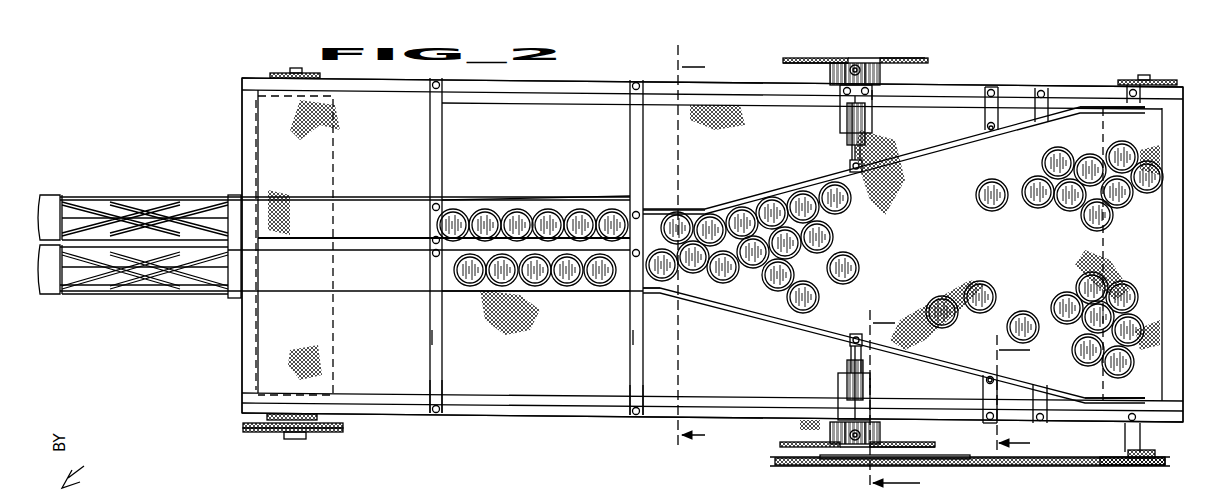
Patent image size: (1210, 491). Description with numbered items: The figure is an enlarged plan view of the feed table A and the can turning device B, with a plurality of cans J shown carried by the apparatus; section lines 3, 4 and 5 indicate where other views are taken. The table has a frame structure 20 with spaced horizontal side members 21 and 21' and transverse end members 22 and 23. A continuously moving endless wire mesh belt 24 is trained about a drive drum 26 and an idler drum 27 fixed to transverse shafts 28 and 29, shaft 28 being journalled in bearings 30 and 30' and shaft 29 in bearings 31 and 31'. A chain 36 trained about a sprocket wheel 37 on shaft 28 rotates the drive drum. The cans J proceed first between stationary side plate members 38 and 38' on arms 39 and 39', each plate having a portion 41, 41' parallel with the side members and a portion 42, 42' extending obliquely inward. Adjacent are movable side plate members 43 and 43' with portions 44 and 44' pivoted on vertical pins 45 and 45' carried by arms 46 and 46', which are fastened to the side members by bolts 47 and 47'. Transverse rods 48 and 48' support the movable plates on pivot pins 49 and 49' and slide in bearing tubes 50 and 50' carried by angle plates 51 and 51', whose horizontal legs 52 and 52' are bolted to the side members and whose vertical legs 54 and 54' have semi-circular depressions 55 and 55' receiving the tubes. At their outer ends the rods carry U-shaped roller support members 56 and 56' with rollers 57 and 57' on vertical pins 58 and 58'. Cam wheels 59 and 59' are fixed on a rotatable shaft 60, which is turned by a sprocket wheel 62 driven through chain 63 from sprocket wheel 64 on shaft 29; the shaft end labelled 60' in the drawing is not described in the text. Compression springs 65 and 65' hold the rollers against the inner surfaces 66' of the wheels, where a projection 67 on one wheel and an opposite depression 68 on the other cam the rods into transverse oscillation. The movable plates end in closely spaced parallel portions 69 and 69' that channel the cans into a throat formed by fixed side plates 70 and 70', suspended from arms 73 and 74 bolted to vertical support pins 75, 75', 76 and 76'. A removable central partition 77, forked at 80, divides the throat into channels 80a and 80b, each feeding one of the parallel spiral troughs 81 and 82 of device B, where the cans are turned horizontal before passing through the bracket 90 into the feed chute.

The frame structure 20 is at (240, 128).
The frame side member 21 is at (712, 396).
The frame side member 21' is at (712, 103).
The end member 22 is at (1166, 240).
The end member 23 is at (246, 335).
The endless wire mesh belt 24 is at (714, 265).
The drive drum 26 is at (334, 324).
The idler drum 27 is at (1100, 244).
The transverse shaft 28 is at (296, 70).
The transverse shaft 29 is at (1152, 70).
The bearing 30 is at (314, 394).
The bearing 30' is at (280, 67).
The bearing 31 is at (1122, 434).
The bearing 31' is at (1165, 78).
The chain 36 is at (246, 425).
The sprocket wheel 37 is at (270, 431).
The stationary side plate member 38 is at (1096, 422).
The stationary side plate member 38' is at (1112, 80).
The arm 39 is at (1035, 392).
The arm 39' is at (1059, 94).
The parallel plate portion 41 is at (1124, 389).
The parallel plate portion 41' is at (1124, 122).
The oblique plate portion 42 is at (894, 345).
The oblique plate portion 42' is at (894, 160).
The movable side plate member 43 is at (861, 307).
The movable side plate member 43' is at (899, 194).
The plate portion 44 is at (913, 336).
The plate portion 44' is at (953, 171).
The vertical pivot pin 45 is at (967, 387).
The vertical pivot pin 45' is at (971, 128).
The transversely extending arm 46 is at (1001, 399).
The transversely extending arm 46' is at (979, 96).
The bolt 47 is at (980, 434).
The bolt 47' is at (1005, 72).
The transversely extending rod 48 is at (818, 354).
The transversely extending rod 48' is at (825, 158).
The vertical pivot pin 49 is at (819, 333).
The vertical pivot pin 49' is at (827, 173).
The cylindrical bearing tube 50 is at (875, 374).
The cylindrical bearing tube 50' is at (827, 124).
The angle plate 51 is at (817, 396).
The angle plate 51' is at (890, 109).
The horizontal leg 52 is at (885, 376).
The horizontal leg 52' is at (915, 81).
The vertical leg 54 is at (815, 380).
The vertical leg 54' is at (821, 130).
The semi-circular depression 55 is at (815, 356).
The semi-circular depression 55' is at (901, 141).
The roller support member 56 is at (840, 433).
The roller support member 56' is at (800, 72).
The roller 57 is at (821, 443).
The roller 57' is at (847, 57).
The vertical pin 58 is at (872, 469).
The vertical pin 58' is at (886, 48).
The cam wheel 59 is at (801, 435).
The cam wheel 59' is at (920, 48).
The rotatable shaft 60 is at (852, 460).
The upper pinion 60' is at (867, 54).
The sprocket wheel 62 is at (838, 462).
The chain 63 is at (992, 466).
The sprocket wheel 64 is at (1120, 460).
The compression spring 65 is at (879, 399).
The compression spring 65' is at (824, 110).
The inner surface 66' is at (810, 49).
The projection 67 is at (880, 444).
The depression 68 is at (880, 73).
The parallel plate portion 69 is at (660, 310).
The parallel plate portion 69' is at (674, 189).
The fixed side plate 70 is at (536, 309).
The fixed side plate 70' is at (536, 186).
The transversely extending arm 73 is at (636, 338).
The transversely extending arm 74 is at (430, 338).
The vertical support pin 75 is at (616, 389).
The vertical support pin 75' is at (618, 247).
The vertical support pin 76 is at (453, 384).
The vertical support pin 76' is at (415, 245).
The central partition 77 is at (371, 236).
The fork 80 is at (573, 282).
The channel 80a is at (351, 269).
The channel 80b is at (345, 212).
The spiral trough 81 is at (186, 299).
The spiral trough 82 is at (152, 194).
The bracket 90 is at (48, 205).
The feed table A is at (1022, 86).
The can turning device B is at (110, 297).
The cans J is at (537, 214).
The section line 3 is at (1013, 395).
The section line 4 is at (895, 397).
The section line 5 is at (691, 252).